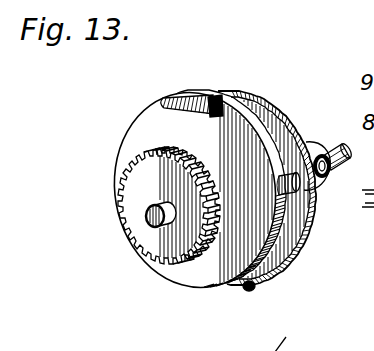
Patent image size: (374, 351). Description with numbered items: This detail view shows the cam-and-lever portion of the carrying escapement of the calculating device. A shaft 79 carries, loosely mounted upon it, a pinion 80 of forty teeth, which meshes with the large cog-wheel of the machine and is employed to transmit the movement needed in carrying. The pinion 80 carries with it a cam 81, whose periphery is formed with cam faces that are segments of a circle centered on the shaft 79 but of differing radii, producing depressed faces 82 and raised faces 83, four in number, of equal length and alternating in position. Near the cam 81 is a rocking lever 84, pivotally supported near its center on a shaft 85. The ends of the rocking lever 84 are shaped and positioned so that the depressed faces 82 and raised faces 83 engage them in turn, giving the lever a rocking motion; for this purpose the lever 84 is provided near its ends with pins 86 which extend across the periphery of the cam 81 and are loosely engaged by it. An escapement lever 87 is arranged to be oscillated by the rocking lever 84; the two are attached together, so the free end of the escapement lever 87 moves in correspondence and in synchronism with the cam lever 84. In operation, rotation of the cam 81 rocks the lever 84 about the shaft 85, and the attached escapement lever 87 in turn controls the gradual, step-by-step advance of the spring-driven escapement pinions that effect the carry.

The shaft 79 is at (150, 220).
The pinion 80 is at (178, 232).
The cam 81 is at (135, 127).
The depressed cam faces 82 is at (203, 98).
The raised cam faces 83 is at (165, 97).
The rocking lever 84 is at (298, 215).
The shaft 85 is at (337, 145).
The pins 86 is at (252, 290).
The escapement lever 87 is at (307, 137).